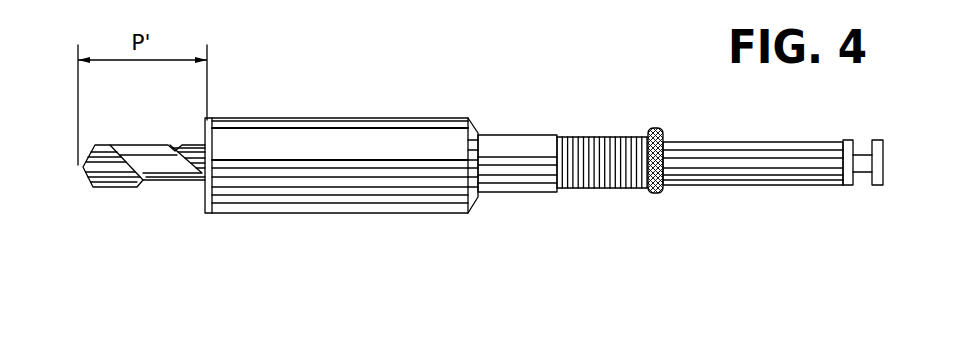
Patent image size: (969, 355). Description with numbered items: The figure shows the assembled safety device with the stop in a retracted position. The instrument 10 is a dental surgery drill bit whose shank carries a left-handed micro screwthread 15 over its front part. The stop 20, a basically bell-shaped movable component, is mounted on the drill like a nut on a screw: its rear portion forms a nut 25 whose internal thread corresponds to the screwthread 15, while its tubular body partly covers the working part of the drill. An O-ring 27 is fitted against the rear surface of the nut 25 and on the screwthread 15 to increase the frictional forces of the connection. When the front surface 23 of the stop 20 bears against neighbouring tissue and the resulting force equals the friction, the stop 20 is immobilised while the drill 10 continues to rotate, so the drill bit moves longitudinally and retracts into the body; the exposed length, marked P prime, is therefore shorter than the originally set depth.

The instrument 10 is at (745, 192).
The screwthread 15 is at (597, 192).
The stop 20 is at (370, 110).
The front surface 23 is at (206, 213).
The nut 25 is at (520, 128).
The O-ring 27 is at (663, 192).